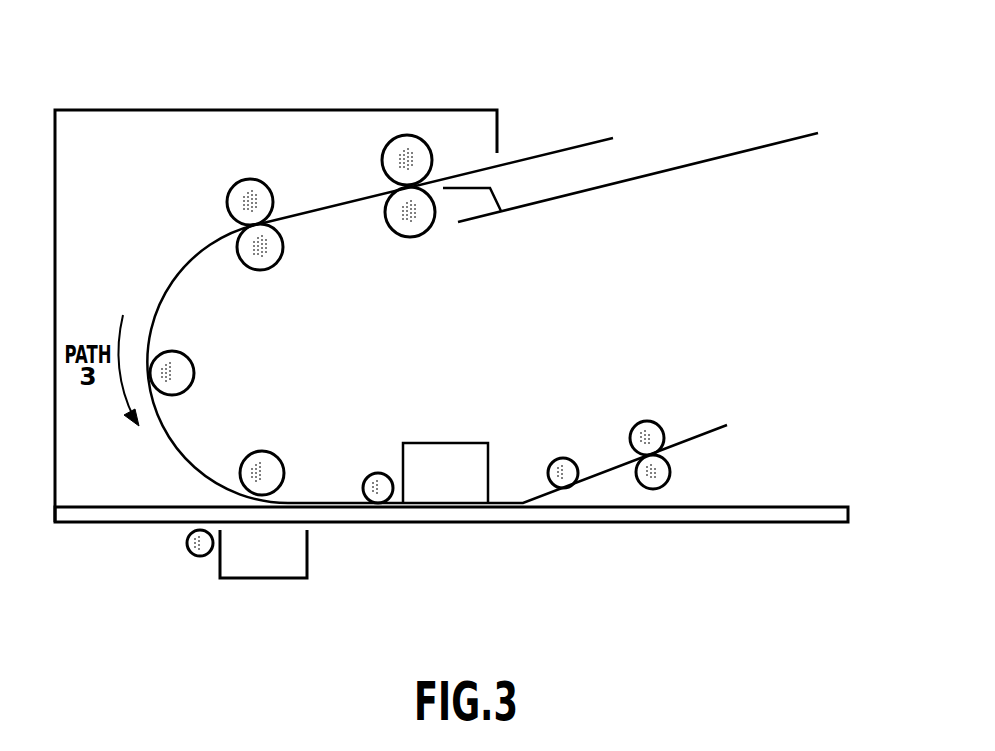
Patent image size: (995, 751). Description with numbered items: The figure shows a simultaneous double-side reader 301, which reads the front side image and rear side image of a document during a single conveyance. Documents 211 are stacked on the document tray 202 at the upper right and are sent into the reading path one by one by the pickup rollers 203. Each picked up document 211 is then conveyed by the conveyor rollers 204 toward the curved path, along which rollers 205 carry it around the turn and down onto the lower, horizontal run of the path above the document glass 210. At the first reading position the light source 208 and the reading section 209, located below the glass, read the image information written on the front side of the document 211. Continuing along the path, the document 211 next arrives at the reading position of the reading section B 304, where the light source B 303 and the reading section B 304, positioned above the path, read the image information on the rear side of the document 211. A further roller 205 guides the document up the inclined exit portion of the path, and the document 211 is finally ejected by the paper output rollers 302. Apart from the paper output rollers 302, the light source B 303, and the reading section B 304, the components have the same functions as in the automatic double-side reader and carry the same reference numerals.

The simultaneous double-side reader 301 is at (93, 108).
The conveyor rollers 204 is at (230, 193).
The pickup rollers 203 is at (420, 235).
The document 211 is at (578, 143).
The document tray 202 is at (732, 155).
The rollers 205 is at (194, 361).
The light source B 303 is at (385, 474).
The reading section B 304 is at (447, 442).
The paper output rollers 302 is at (650, 422).
The document glass 210 is at (683, 525).
The light source 208 is at (188, 550).
The reading section 209 is at (253, 580).